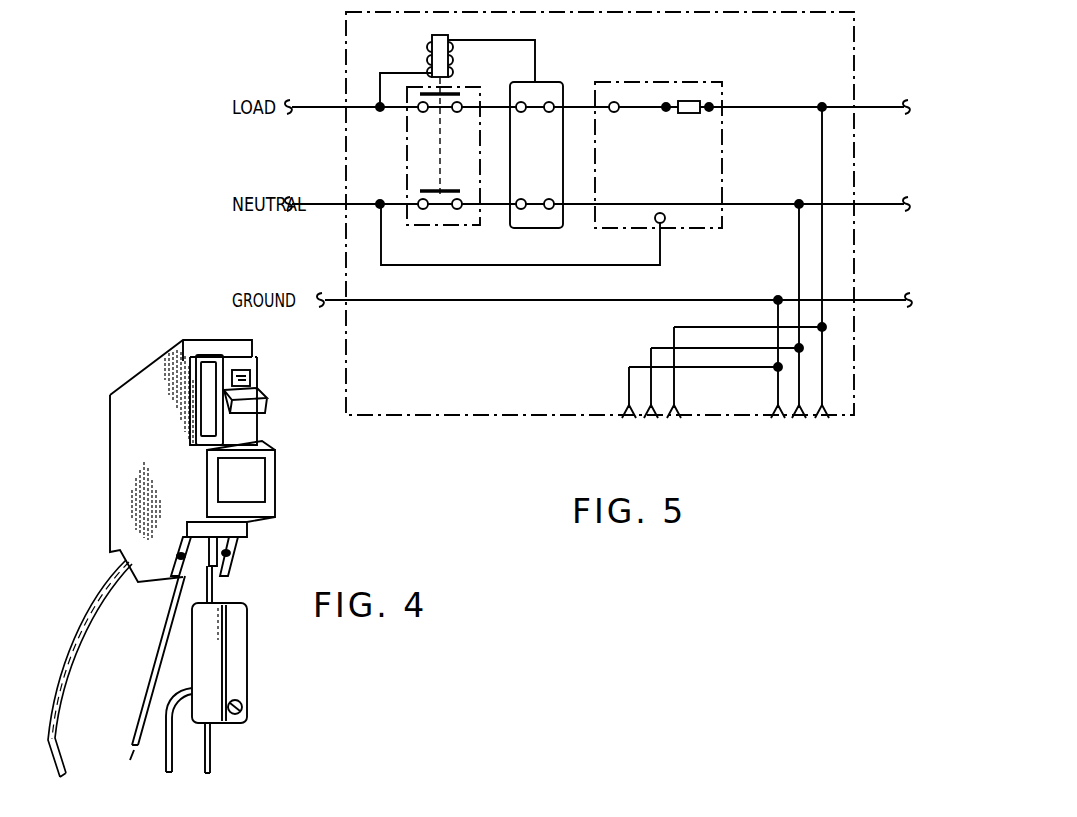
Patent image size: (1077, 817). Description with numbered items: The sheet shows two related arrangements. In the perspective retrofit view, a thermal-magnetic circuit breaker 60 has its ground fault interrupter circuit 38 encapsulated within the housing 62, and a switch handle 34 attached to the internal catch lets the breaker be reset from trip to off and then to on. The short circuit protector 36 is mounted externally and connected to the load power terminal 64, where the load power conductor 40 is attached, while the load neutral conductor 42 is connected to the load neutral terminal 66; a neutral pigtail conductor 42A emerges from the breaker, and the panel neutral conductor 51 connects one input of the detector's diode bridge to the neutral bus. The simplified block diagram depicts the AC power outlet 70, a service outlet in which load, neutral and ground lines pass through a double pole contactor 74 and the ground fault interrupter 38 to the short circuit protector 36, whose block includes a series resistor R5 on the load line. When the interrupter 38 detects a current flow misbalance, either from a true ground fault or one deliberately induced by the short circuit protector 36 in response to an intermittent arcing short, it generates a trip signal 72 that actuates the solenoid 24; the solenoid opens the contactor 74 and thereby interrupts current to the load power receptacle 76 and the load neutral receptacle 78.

In FIG. 5, the solenoid 24 is at (422, 52).
In FIG. 4, the switch handle 34 is at (265, 405).
In FIG. 5, the short circuit protector 36 is at (677, 135).
In FIG. 4, the short circuit protector 36 is at (250, 684).
In FIG. 5, the ground fault interrupter circuit 38 is at (541, 81).
In FIG. 5, the load power conductor 40 is at (880, 107).
In FIG. 4, the load power conductor 40 is at (213, 598).
In FIG. 5, the load neutral conductor 42 is at (878, 204).
In FIG. 4, the load neutral conductor 42 is at (155, 651).
In FIG. 4, the neutral pigtail conductor 42A is at (100, 592).
In FIG. 5, the panel neutral conductor 51 is at (489, 266).
In FIG. 4, the panel neutral conductor 51 is at (168, 749).
In FIG. 4, the thermal-magnetic circuit breaker 60 is at (179, 442).
In FIG. 4, the housing 62 is at (120, 413).
In FIG. 4, the load power terminal 64 is at (232, 557).
In FIG. 4, the load neutral terminal 66 is at (179, 561).
In FIG. 5, the AC power outlet 70 is at (338, 36).
In FIG. 5, the trip signal 72 is at (494, 22).
In FIG. 5, the double pole contactor 74 is at (407, 173).
In FIG. 5, the load power receptacle 76 is at (759, 389).
In FIG. 5, the load neutral receptacle 78 is at (804, 412).
In FIG. 5, the resistor R5 is at (684, 100).